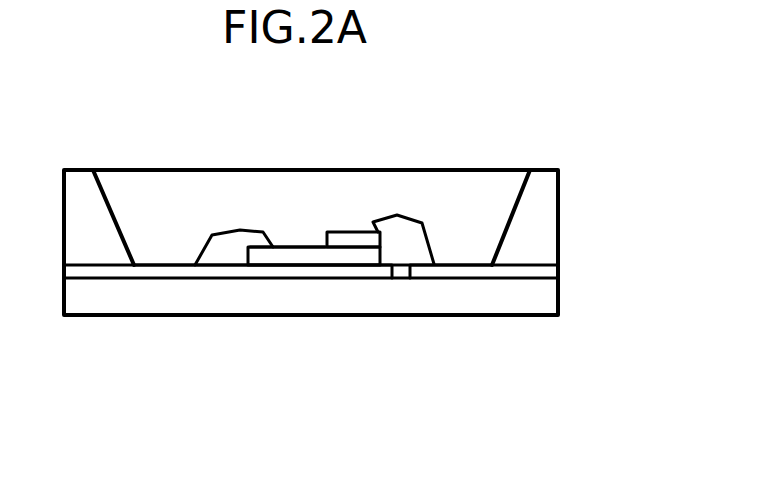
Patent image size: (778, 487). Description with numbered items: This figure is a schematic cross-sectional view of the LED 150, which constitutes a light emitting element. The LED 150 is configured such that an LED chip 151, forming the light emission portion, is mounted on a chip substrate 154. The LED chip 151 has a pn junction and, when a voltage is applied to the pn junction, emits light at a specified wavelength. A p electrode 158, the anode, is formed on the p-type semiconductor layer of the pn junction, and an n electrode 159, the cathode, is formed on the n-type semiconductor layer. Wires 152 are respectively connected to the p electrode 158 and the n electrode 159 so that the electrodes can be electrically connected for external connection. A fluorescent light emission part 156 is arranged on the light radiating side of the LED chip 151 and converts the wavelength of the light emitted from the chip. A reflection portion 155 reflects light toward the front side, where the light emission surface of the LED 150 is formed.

The LED 150 is at (285, 322).
The LED chip 151 is at (303, 247).
The wires 152 is at (208, 233).
The chip substrate 154 is at (213, 293).
The reflection portion 155 is at (103, 175).
The fluorescent light emission part 156 is at (155, 210).
The p electrode 158 is at (342, 230).
The n electrode 159 is at (274, 250).